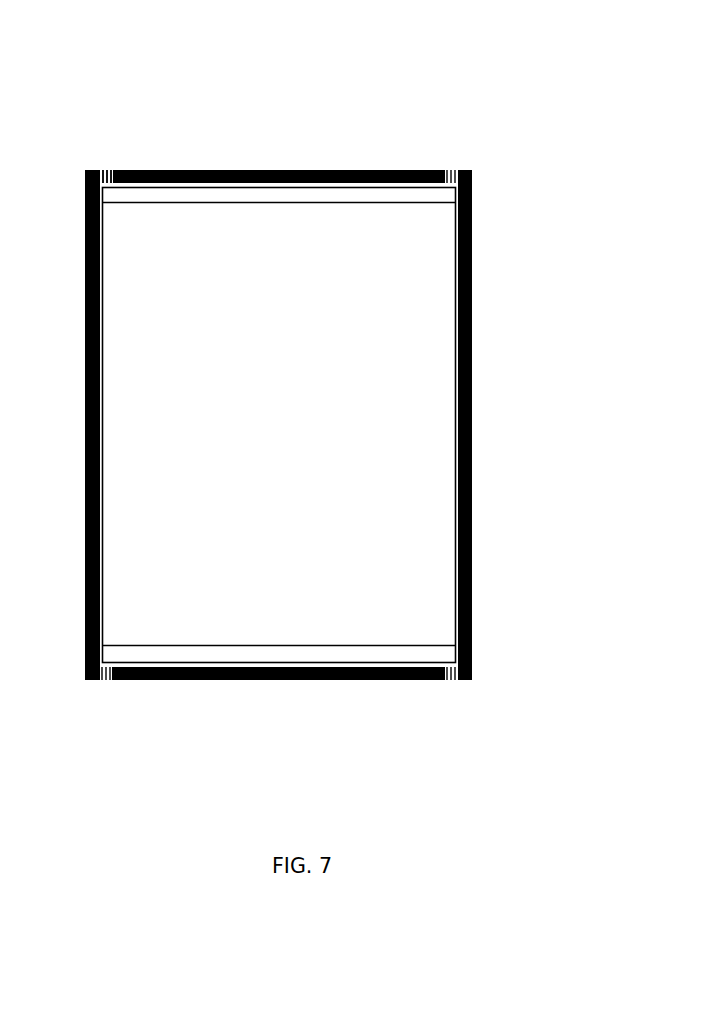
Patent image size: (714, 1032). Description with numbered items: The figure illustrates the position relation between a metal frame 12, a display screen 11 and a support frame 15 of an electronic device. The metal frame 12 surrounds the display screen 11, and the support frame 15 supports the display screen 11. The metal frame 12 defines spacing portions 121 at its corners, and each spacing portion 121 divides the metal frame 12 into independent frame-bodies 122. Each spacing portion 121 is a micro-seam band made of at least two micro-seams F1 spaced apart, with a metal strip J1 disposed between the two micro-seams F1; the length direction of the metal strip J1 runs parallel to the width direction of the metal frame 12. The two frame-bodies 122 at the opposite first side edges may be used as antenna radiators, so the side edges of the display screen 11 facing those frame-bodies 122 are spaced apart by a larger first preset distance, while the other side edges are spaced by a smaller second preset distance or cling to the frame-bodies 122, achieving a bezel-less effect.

The metal frame 12 is at (295, 348).
The frame-body 122 is at (272, 170).
The spacing portion 121 is at (173, 104).
The micro-seam F1 is at (102, 167).
The metal strip J1 is at (107, 167).
The display screen 11 is at (423, 292).
The support frame 15 is at (412, 188).